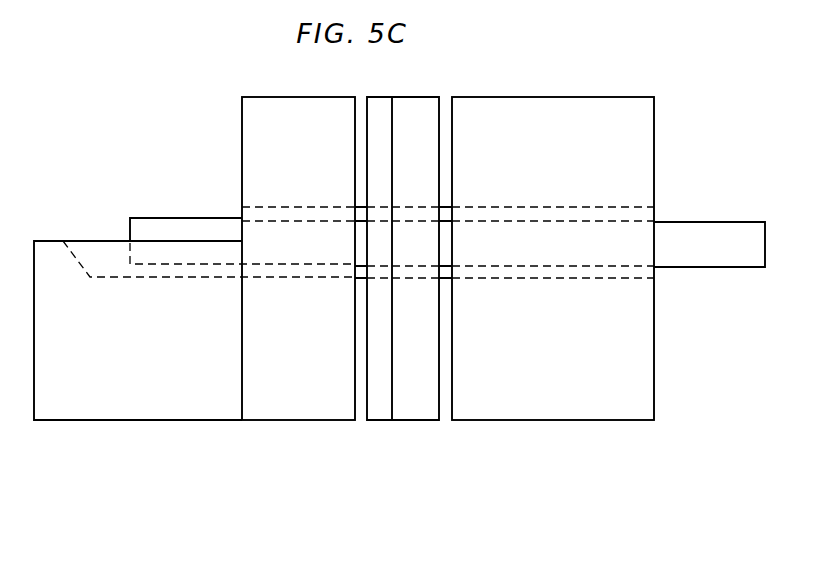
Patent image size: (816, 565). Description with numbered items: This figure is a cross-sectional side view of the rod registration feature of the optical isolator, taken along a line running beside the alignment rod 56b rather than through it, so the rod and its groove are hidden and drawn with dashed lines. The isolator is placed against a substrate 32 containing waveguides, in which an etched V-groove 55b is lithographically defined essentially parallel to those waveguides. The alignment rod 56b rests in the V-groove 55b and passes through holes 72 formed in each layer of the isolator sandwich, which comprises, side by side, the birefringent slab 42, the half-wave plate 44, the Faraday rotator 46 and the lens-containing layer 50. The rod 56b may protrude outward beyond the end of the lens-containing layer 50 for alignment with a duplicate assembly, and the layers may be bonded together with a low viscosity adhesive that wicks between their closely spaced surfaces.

The substrate 32 is at (140, 413).
The birefringent slab 42 is at (272, 106).
The half-wave plate 44 is at (381, 414).
The Faraday rotator 46 is at (418, 414).
The lens-containing layer 50 is at (629, 108).
The etched V-groove 55b is at (103, 273).
The alignment rod 56b is at (170, 222).
The holes 72 is at (371, 270).